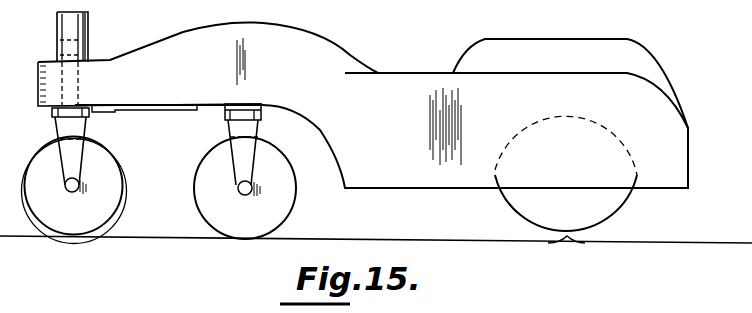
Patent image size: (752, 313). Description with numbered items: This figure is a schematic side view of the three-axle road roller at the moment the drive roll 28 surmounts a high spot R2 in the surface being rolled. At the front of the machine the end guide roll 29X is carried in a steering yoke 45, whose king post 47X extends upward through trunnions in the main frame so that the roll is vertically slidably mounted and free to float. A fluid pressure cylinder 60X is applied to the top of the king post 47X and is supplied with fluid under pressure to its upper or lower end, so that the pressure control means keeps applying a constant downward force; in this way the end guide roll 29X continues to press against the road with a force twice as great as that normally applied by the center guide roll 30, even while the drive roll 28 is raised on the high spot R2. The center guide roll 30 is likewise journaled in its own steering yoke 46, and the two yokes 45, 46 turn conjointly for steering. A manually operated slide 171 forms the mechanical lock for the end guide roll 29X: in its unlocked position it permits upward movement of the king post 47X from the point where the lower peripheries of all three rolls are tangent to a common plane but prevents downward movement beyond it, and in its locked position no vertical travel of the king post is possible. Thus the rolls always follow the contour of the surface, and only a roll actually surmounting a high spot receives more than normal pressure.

The fluid pressure cylinder 60X is at (88, 28).
The king post 47X is at (80, 82).
The steering yoke 45 is at (78, 122).
The manually operated slide 171 is at (162, 107).
The end guide roll 29X is at (112, 182).
The steering yoke 46 is at (252, 128).
The center guide roll 30 is at (287, 182).
The drive roll 28 is at (620, 198).
The high spot R2 is at (573, 240).